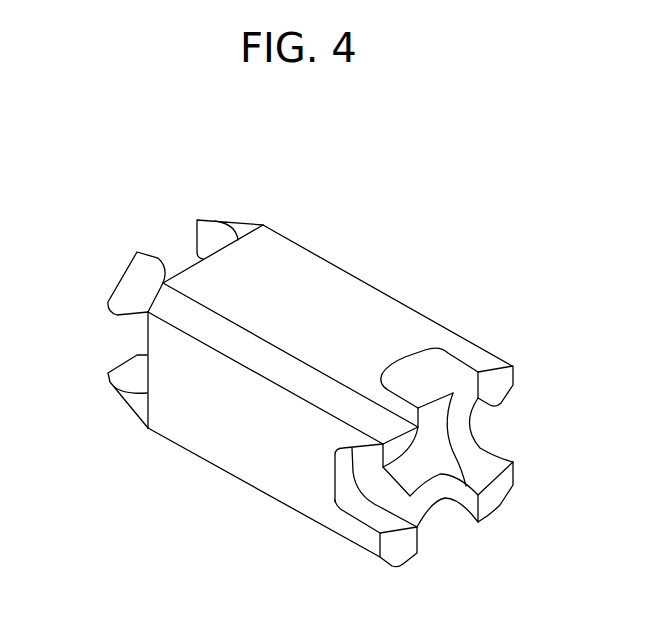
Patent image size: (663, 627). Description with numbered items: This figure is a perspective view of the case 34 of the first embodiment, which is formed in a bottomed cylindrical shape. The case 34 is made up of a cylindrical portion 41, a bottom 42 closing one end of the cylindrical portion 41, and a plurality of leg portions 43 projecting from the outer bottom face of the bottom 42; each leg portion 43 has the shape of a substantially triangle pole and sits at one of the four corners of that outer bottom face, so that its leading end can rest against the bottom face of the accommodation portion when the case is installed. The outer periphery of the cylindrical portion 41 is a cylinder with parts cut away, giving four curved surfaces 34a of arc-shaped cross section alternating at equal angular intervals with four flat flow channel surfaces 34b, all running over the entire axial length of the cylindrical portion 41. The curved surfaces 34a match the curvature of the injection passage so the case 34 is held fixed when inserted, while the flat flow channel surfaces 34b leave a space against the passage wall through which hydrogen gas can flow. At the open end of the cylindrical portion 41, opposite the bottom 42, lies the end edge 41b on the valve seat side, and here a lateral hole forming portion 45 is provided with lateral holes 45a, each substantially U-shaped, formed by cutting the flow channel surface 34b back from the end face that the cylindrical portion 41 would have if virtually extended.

The case 34 is at (159, 164).
The curved surface 34a is at (256, 343).
The flow channel surface 34b is at (355, 300).
The cylindrical portion 41 is at (238, 476).
The end edge 41b is at (470, 426).
The bottom 42 is at (151, 428).
The leg portion 43 is at (197, 235).
The lateral hole forming portion 45 is at (478, 353).
The lateral hole 45a is at (454, 368).